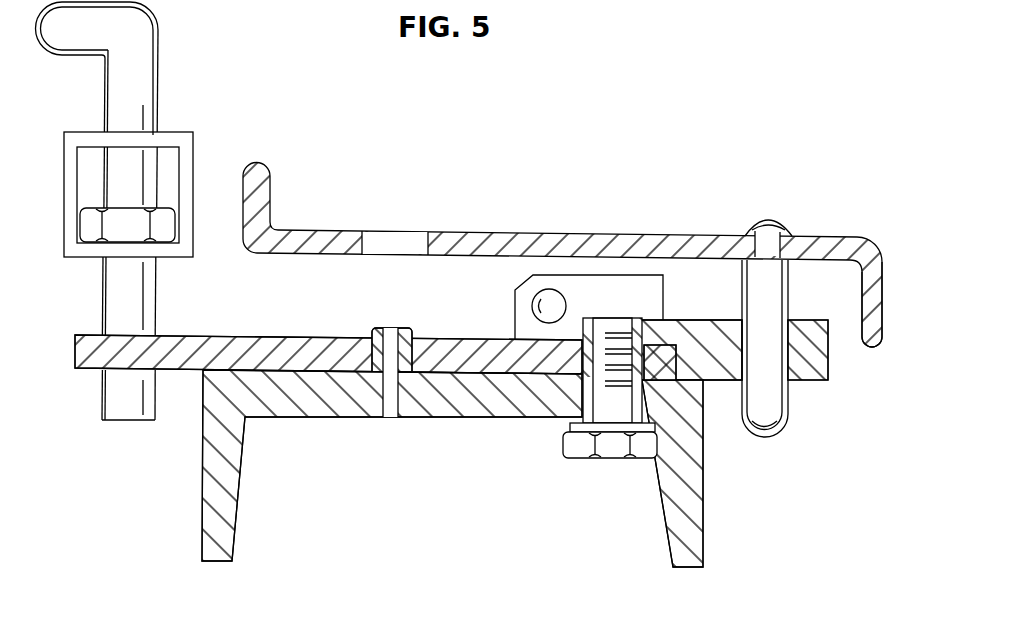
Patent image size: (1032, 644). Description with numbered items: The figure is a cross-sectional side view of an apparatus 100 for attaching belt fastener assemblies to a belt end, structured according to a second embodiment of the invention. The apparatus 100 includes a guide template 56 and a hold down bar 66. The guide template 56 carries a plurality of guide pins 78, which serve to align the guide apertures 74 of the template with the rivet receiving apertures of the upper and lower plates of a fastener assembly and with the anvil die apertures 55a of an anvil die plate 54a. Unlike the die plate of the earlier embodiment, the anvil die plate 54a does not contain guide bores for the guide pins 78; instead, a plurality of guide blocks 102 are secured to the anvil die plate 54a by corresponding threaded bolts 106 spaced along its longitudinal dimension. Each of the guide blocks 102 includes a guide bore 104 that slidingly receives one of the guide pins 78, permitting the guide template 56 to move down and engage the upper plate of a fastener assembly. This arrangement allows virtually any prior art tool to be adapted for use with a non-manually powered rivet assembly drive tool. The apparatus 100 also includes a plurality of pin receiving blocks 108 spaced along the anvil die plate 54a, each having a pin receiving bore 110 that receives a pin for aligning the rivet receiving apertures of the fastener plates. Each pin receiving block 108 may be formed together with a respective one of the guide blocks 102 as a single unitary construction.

The hold down bar 66 is at (188, 134).
The guide apertures 74 is at (423, 231).
The guide template 56 is at (562, 255).
The guide pins 78 is at (790, 283).
The anvil die plate 54a is at (277, 337).
The anvil die apertures 55a is at (397, 330).
The pin receiving block 108 is at (577, 271).
The pin receiving bore 110 is at (538, 302).
The threaded bolts 106 is at (568, 407).
The apparatus 100 is at (783, 297).
The guide bore 104 is at (788, 376).
The guide blocks 102 is at (822, 351).